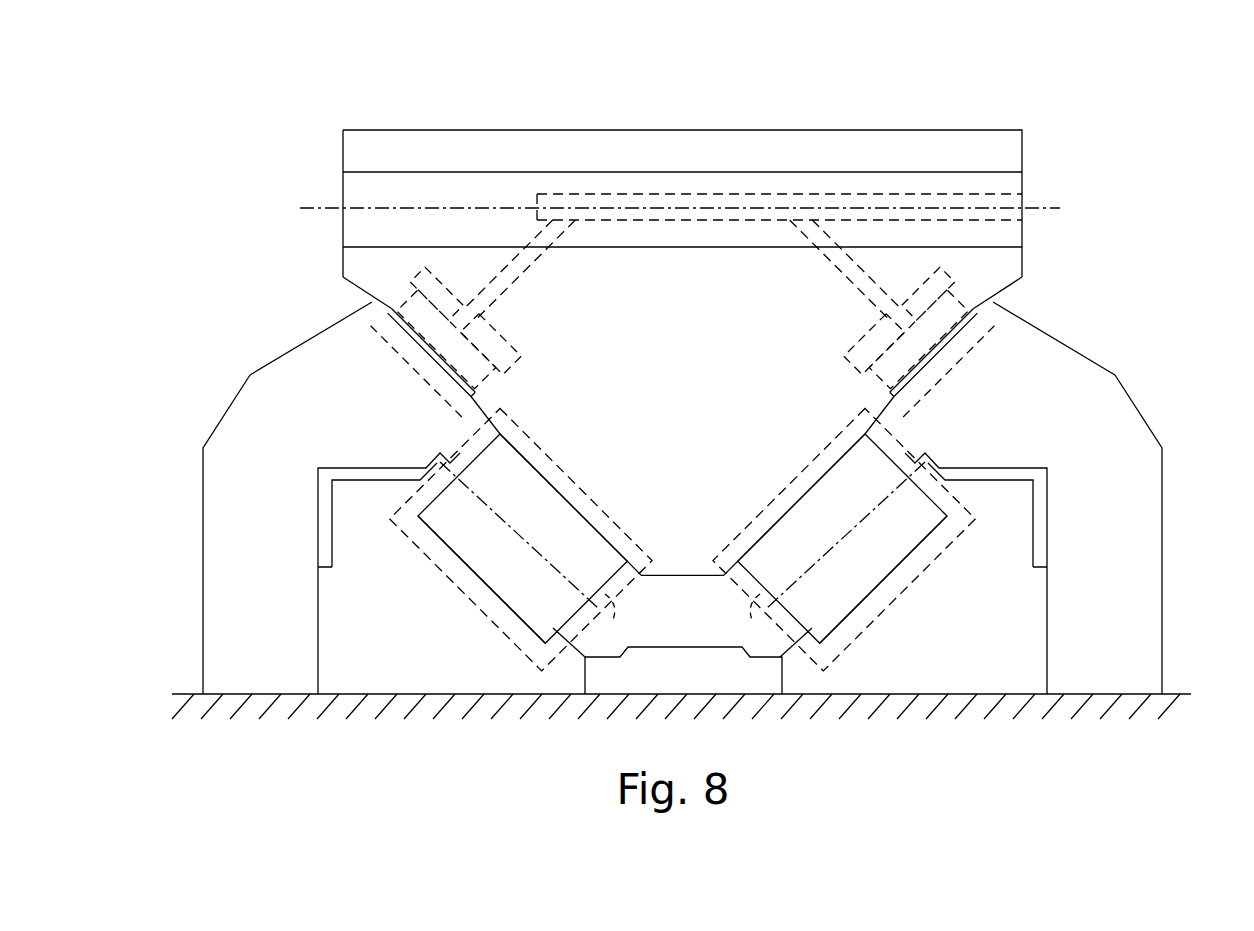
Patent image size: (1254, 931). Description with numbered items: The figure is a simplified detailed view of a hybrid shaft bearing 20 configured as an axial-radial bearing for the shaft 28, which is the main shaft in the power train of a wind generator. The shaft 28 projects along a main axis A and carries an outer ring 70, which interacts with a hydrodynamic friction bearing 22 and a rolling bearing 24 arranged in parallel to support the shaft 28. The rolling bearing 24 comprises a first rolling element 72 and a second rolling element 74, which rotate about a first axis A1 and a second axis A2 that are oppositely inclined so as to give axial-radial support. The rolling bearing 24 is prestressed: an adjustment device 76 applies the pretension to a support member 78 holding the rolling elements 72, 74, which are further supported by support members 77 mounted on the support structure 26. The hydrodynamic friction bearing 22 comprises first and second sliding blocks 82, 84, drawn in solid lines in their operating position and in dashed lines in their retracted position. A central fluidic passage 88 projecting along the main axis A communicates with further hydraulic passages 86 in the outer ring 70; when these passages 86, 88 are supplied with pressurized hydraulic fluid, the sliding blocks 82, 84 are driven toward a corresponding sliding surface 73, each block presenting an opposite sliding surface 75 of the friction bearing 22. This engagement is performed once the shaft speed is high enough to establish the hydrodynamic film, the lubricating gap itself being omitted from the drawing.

The hybrid shaft bearing 20 is at (1152, 319).
The hydrodynamic friction bearing 22 is at (367, 302).
The rolling bearing 24 is at (490, 507).
The support structure 26 is at (1140, 694).
The shaft 28 is at (478, 190).
The outer ring 70 is at (664, 396).
The first rolling element 72 is at (490, 590).
The sliding surface 73 is at (397, 317).
The second rolling element 74 is at (880, 590).
The opposite sliding surface 75 is at (400, 340).
The adjustment device 76 is at (690, 680).
The support members 77 is at (212, 552).
The support member 78 is at (668, 629).
The first sliding block 82 is at (478, 370).
The second sliding block 84 is at (880, 365).
The further hydraulic passages 86 is at (520, 277).
The central fluidic passage 88 is at (840, 194).
The main axis A is at (1060, 207).
The first axis A1 is at (563, 577).
The second axis A2 is at (805, 572).